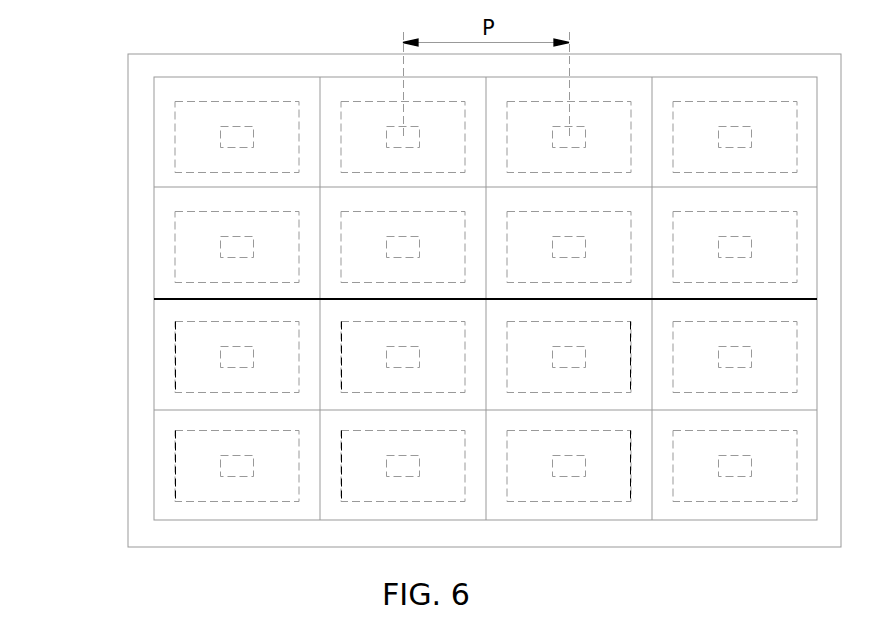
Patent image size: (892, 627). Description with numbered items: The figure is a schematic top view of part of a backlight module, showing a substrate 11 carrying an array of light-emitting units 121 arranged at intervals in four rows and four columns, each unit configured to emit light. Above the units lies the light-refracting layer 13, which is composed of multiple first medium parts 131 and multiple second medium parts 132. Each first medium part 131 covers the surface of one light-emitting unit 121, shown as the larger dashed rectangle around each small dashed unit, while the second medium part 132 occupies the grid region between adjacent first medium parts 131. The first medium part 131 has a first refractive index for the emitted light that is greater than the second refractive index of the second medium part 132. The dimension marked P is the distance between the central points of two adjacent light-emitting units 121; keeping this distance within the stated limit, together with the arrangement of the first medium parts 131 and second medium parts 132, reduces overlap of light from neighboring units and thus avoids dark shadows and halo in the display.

The substrate 11 is at (133, 298).
The light-refracting layer 13 is at (50, 132).
The first medium part 131 is at (153, 153).
The second medium part 132 is at (175, 115).
The light-emitting unit 121 is at (238, 127).